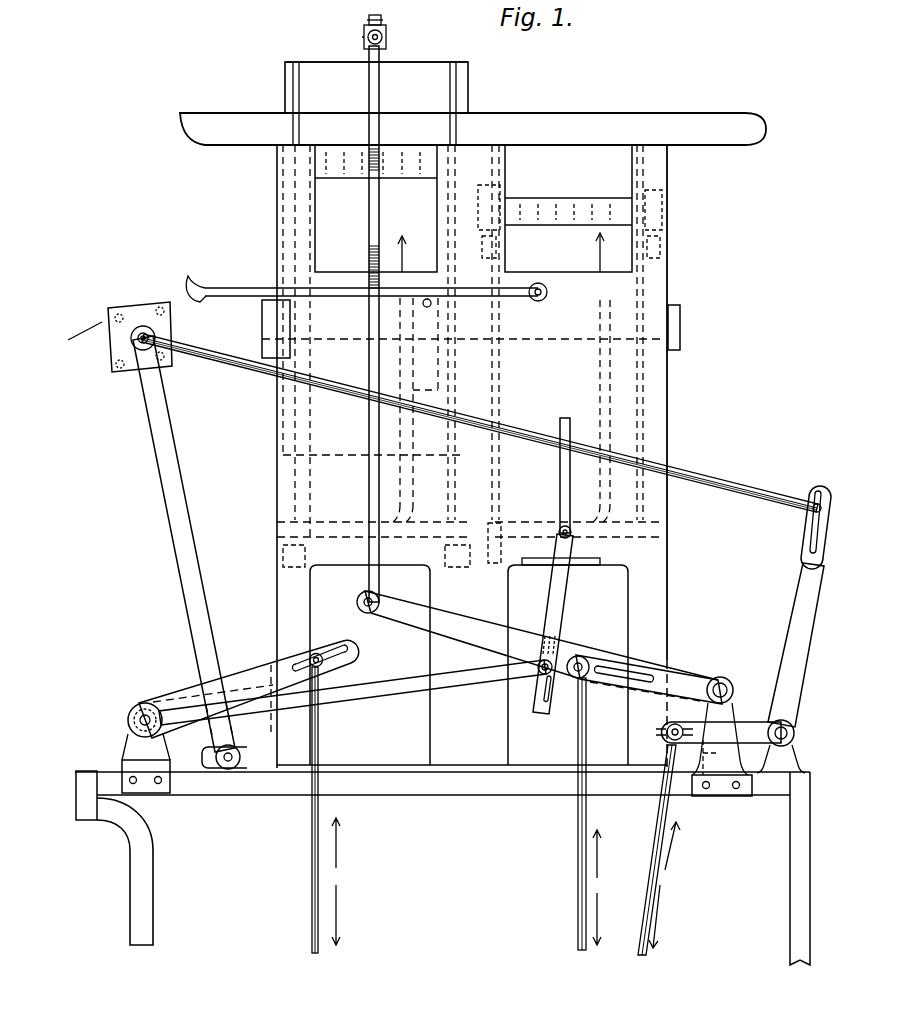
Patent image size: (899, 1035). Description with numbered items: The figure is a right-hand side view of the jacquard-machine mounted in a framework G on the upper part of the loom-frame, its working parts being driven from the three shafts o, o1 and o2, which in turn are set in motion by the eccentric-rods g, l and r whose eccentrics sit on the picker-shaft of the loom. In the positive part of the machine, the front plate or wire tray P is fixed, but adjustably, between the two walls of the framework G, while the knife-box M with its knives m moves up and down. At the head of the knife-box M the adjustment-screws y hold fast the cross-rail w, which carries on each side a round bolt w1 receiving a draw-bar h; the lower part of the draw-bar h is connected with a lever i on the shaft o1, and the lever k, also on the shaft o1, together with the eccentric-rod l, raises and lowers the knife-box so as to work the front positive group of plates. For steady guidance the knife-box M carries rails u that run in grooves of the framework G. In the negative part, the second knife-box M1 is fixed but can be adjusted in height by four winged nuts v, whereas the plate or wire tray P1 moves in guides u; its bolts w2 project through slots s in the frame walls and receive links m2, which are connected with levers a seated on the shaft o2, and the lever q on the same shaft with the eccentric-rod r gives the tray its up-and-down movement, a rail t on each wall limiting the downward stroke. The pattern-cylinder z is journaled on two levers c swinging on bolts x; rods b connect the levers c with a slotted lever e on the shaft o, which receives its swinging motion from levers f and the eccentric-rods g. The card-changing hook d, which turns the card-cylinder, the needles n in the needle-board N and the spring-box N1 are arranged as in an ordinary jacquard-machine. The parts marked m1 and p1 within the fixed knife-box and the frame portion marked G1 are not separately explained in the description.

The adjustment-screws y is at (380, 22).
The round bolts w1 is at (362, 37).
The cross-rail w is at (386, 40).
The knife-box M is at (440, 70).
The rails u is at (300, 84).
The winged nuts v is at (500, 187).
The second knife-box M1 is at (552, 200).
The knives m is at (413, 170).
The draw-bar h is at (370, 200).
The front plate or wire tray P is at (318, 518).
The secondary comb plate m1 is at (541, 228).
The secondary plunger p1 is at (584, 252).
The card-changing hook d is at (232, 286).
The spring-box N1 is at (680, 318).
The needle-board N is at (259, 329).
The needles n is at (263, 340).
The pattern-cylinder z is at (150, 365).
The rods b is at (246, 362).
The levers c is at (162, 425).
The framework G is at (656, 402).
The plate or wire tray P1 is at (502, 518).
The slots s is at (572, 500).
The bolts w2 is at (572, 532).
The rail t is at (592, 570).
The links m2 is at (552, 620).
The lever i is at (452, 630).
The shaft o2 is at (148, 690).
The lever q is at (241, 672).
The levers a is at (388, 688).
The lever k is at (648, 672).
The shaft o1 is at (728, 684).
The levers f is at (733, 728).
The slotted lever e is at (806, 618).
The shaft o is at (795, 730).
The frame leg G1 is at (142, 836).
The bolts x is at (226, 769).
The eccentric-rod r is at (310, 832).
The eccentric-rod l is at (576, 824).
The eccentric-rods g is at (672, 820).